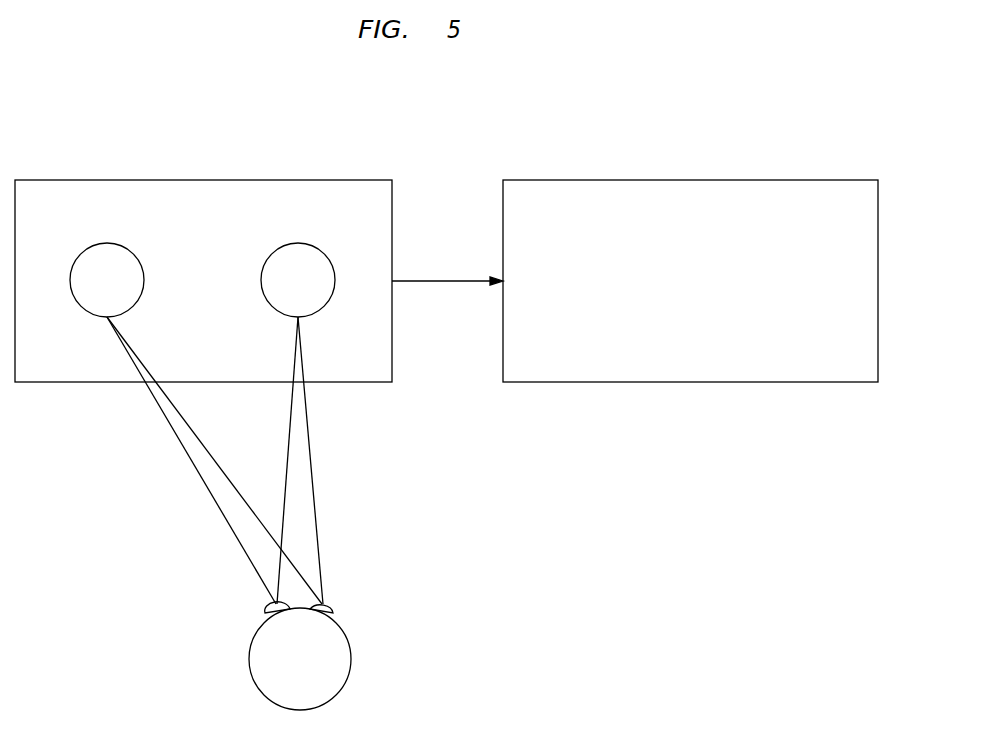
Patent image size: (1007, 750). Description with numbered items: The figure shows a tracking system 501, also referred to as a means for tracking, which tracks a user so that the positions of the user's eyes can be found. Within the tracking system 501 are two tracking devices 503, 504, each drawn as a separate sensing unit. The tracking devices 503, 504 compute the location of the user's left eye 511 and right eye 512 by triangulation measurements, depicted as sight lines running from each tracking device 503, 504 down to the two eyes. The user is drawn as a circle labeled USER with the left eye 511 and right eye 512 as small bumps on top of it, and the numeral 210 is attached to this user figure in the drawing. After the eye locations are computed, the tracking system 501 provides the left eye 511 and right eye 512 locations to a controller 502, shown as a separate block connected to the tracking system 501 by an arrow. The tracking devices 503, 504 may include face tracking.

The tracking system 501 is at (207, 180).
The controller 502 is at (691, 180).
The tracking device 503 is at (125, 246).
The tracking device 504 is at (314, 246).
The left eye 511 is at (267, 612).
The right eye 512 is at (334, 612).
The user 210 is at (268, 704).